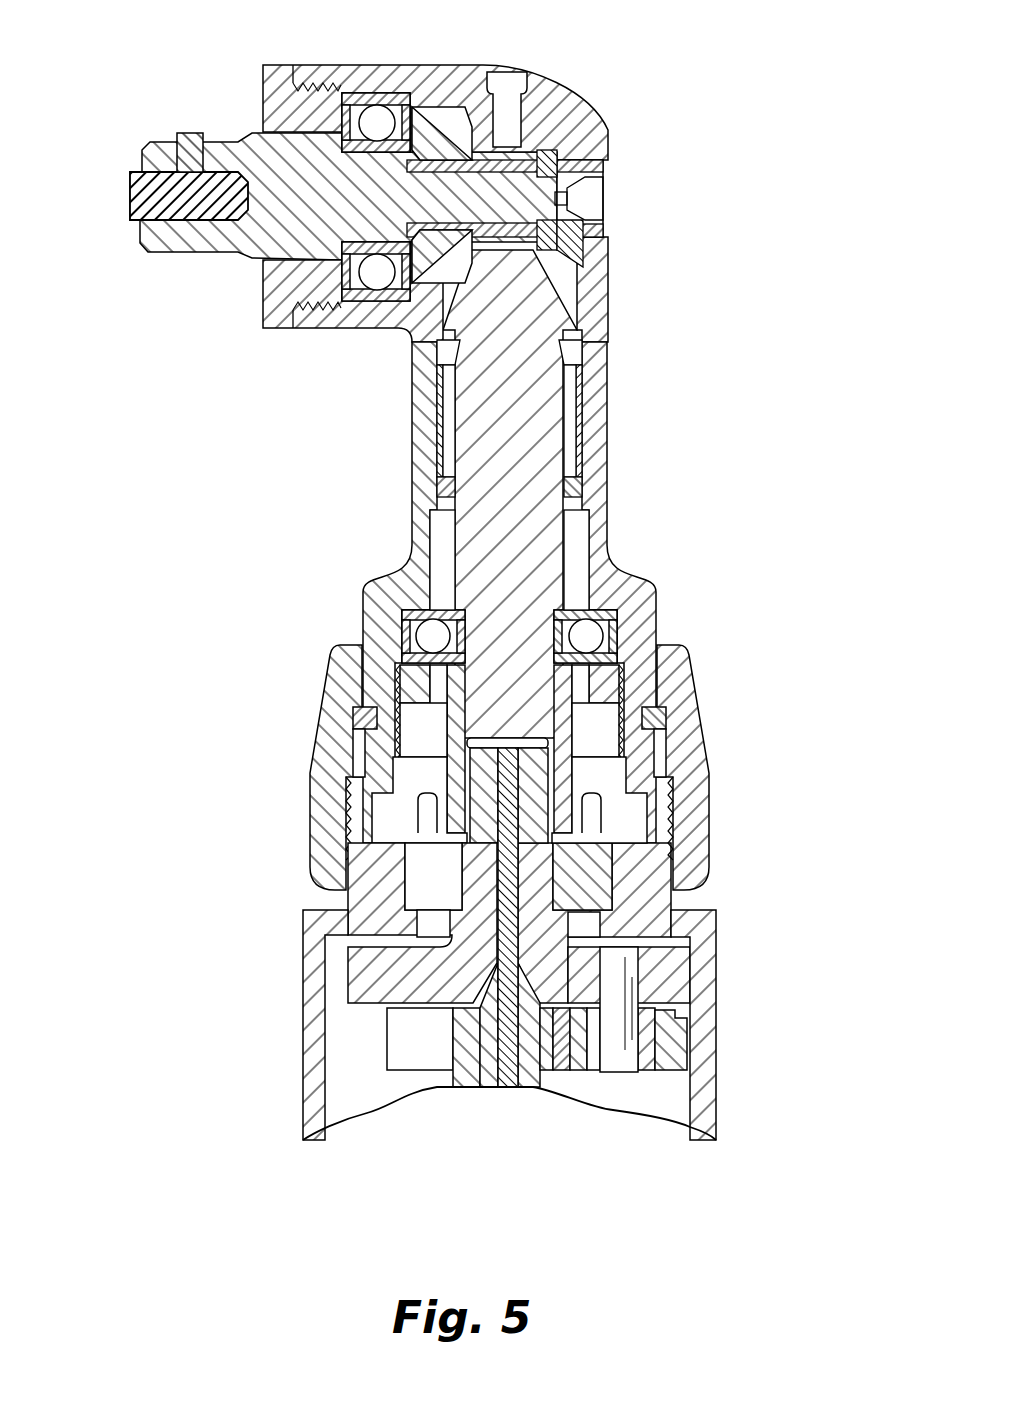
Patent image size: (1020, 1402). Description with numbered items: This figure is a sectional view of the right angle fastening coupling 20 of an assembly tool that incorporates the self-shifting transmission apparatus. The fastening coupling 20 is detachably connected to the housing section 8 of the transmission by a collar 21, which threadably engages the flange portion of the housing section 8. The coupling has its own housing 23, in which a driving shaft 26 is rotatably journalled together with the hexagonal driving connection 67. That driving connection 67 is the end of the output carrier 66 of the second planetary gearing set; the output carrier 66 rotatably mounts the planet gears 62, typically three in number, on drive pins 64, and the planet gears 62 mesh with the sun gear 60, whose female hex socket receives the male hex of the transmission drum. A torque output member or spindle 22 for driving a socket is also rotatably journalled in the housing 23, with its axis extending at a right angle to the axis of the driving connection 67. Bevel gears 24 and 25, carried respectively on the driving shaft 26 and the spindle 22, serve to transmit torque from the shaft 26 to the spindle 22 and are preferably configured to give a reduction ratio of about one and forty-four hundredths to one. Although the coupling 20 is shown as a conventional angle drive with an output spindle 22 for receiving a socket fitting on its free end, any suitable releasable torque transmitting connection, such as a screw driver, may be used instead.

The housing section 8 is at (708, 946).
The right angle fastening coupling 20 is at (466, 592).
The collar 21 is at (330, 830).
The spindle 22 is at (270, 223).
The housing 23 is at (627, 588).
The bevel gear 24 is at (450, 298).
The bevel gear 25 is at (447, 122).
The driving shaft 26 is at (530, 443).
The sun gear 60 is at (473, 1055).
The planet gears 62 is at (670, 1046).
The drive pins 64 is at (613, 1055).
The output carrier 66 is at (367, 978).
The hexagonal driving connection 67 is at (535, 787).